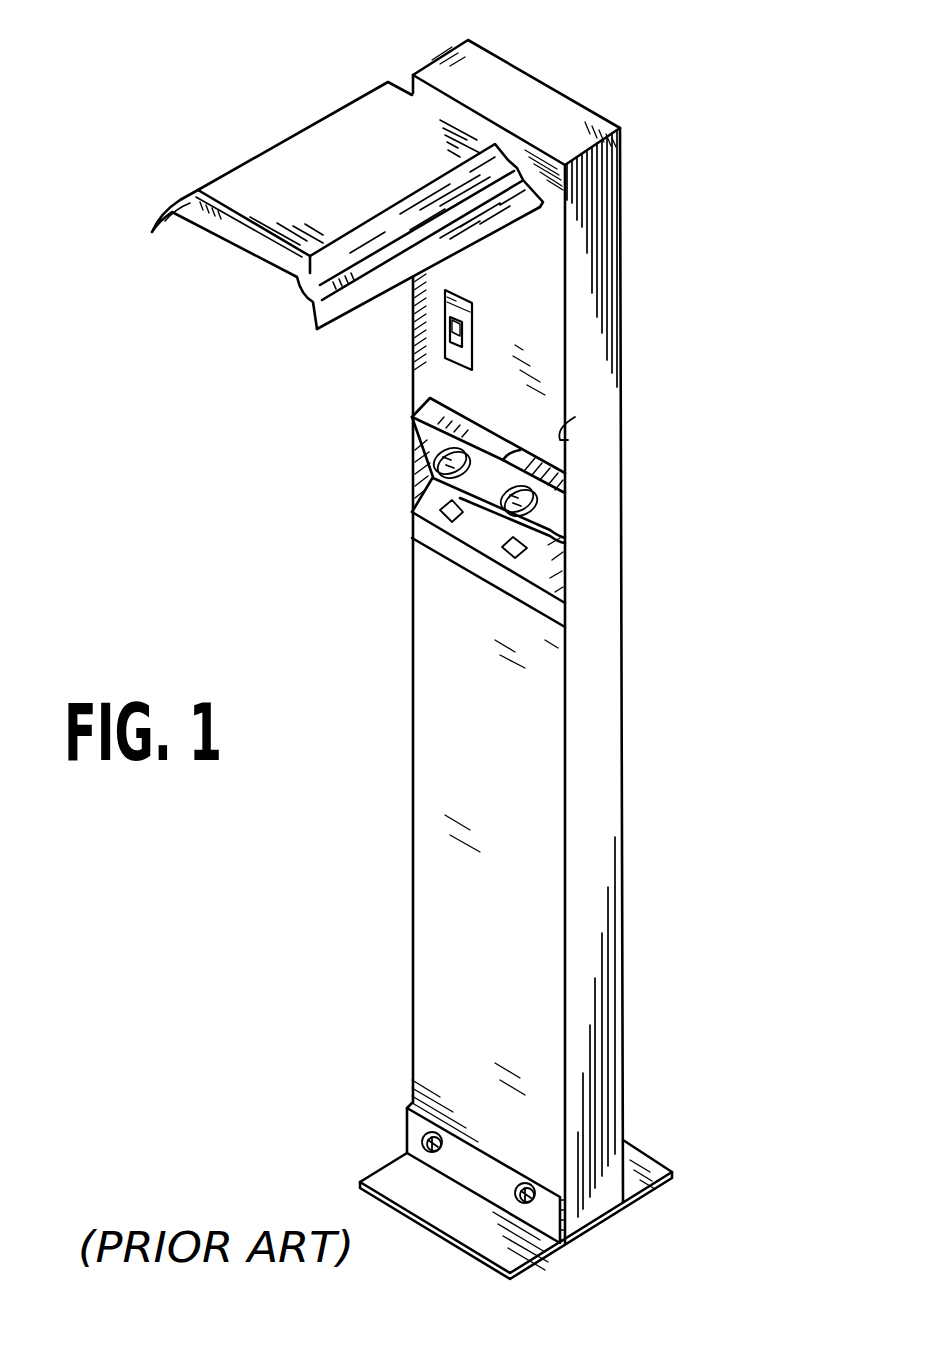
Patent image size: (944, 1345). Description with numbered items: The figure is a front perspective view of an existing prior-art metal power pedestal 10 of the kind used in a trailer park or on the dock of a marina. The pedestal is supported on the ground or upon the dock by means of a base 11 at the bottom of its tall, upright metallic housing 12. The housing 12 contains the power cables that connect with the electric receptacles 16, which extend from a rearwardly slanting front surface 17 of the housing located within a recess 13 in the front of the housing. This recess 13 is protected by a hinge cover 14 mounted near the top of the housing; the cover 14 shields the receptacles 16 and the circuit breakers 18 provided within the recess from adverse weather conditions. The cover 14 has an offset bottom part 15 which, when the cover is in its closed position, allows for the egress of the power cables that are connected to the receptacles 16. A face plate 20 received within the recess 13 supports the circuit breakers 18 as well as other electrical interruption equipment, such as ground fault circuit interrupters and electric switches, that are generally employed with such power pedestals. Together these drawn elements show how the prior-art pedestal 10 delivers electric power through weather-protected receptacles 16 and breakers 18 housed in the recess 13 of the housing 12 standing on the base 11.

The metal power pedestal 10 is at (268, 1094).
The base 11 is at (632, 1160).
The metallic housing 12 is at (623, 853).
The recess 13 is at (575, 417).
The hinge cover 14 is at (313, 179).
The offset bottom part 15 is at (173, 222).
The electric receptacles 16 is at (505, 537).
The rearwardly slanting front surface 17 is at (520, 452).
The circuit breakers 18 is at (445, 336).
The face plate 20 is at (516, 503).